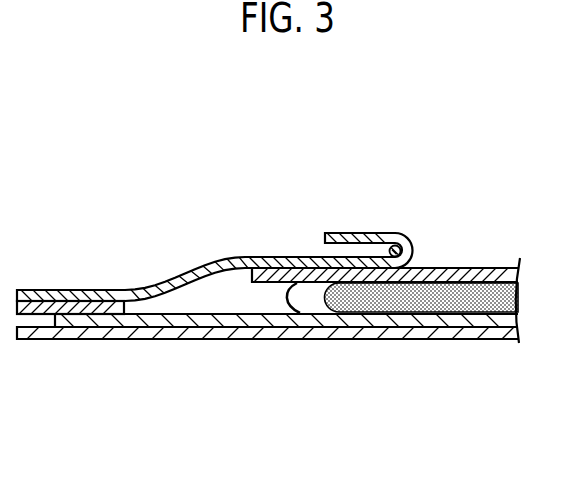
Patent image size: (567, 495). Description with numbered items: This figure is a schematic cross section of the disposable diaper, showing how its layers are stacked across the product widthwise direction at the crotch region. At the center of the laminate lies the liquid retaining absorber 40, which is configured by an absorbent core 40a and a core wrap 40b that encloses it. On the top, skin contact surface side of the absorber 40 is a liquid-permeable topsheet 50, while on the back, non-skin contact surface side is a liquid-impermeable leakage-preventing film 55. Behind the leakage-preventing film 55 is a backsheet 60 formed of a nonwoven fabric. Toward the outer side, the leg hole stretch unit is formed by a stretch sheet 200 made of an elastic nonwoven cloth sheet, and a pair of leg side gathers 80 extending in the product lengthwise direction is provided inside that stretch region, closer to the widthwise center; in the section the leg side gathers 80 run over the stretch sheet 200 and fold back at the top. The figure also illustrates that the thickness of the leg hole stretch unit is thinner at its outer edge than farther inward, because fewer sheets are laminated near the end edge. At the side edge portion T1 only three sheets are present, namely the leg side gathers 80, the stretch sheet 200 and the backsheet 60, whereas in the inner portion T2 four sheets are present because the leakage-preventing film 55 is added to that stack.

The leg side gathers 80 is at (262, 262).
The stretch sheet 200 is at (88, 304).
The topsheet 50 is at (454, 272).
The leakage-preventing film 55 is at (258, 322).
The backsheet 60 is at (182, 332).
The absorber 40 is at (402, 361).
The absorbent core 40a is at (299, 290).
The core wrap 40b is at (320, 392).
The side edge portion T1 is at (53, 355).
The inner portion T2 is at (123, 355).